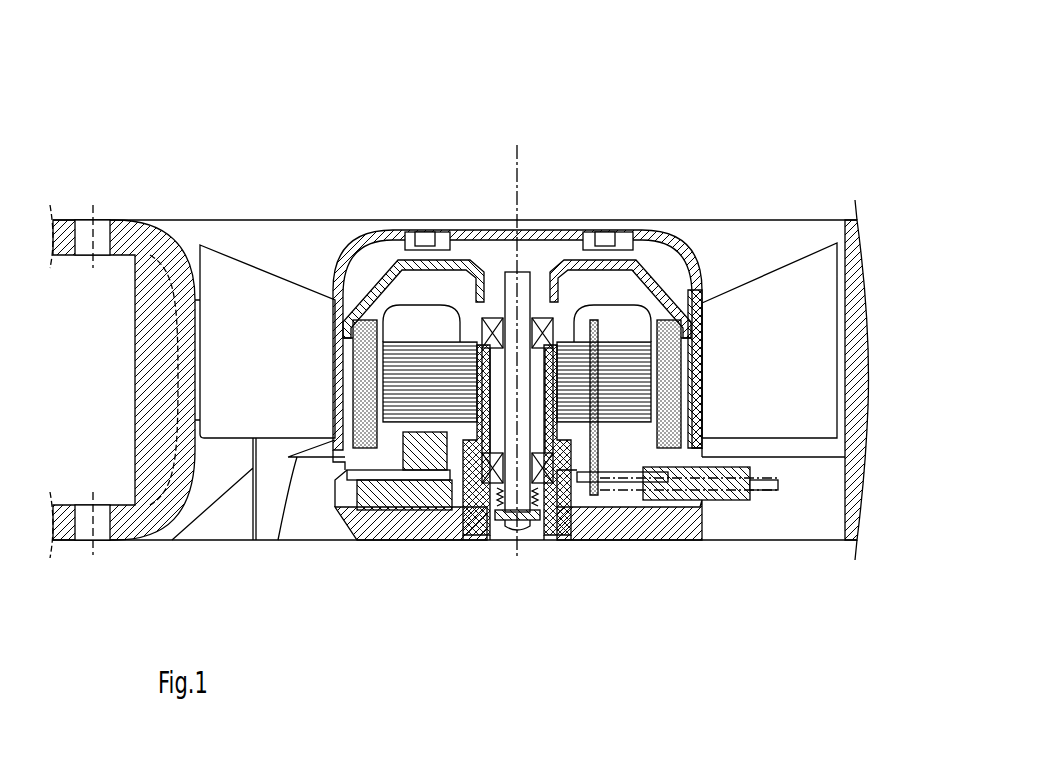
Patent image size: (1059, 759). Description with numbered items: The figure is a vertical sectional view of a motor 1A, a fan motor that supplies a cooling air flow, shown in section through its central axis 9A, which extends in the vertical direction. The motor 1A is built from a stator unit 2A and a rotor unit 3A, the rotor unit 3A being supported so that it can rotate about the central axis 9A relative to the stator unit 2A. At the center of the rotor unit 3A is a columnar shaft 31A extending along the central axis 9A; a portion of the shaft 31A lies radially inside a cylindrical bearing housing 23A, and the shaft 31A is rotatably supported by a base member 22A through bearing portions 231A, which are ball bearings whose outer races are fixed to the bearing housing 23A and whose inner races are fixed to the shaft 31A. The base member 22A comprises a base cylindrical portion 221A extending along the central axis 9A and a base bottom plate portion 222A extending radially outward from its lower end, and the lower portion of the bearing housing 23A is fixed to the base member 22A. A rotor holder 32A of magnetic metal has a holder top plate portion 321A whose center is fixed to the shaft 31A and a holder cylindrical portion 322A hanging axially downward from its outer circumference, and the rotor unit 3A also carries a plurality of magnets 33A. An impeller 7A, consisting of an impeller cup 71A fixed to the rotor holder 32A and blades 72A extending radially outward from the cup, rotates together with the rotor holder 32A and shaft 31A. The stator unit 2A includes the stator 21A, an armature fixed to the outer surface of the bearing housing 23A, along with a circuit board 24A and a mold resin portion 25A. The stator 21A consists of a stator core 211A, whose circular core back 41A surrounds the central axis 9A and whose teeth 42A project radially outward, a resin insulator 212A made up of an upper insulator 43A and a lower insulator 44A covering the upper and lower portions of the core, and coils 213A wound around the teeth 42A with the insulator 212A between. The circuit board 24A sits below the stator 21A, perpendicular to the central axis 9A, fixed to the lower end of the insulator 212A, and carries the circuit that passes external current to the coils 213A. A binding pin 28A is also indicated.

The motor 1A is at (570, 95).
The stator unit 2A is at (576, 497).
The stator 21A is at (519, 373).
The stator core 211A is at (475, 393).
The insulator 212A is at (666, 339).
The coils 213A is at (617, 320).
The base member 22A is at (546, 497).
The base cylindrical portion 221A is at (447, 407).
The base bottom plate portion 222A is at (395, 430).
The bearing housing 23A is at (560, 515).
The bearing portions 231A is at (488, 500).
The circuit board 24A is at (640, 483).
The mold resin portion 25A is at (689, 539).
The binding pin 28A is at (575, 285).
The rotor unit 3A is at (506, 282).
The shaft 31A is at (517, 238).
The rotor holder 32A is at (517, 293).
The holder top plate portion 321A is at (455, 345).
The holder cylindrical portion 322A is at (365, 325).
The magnets 33A is at (337, 300).
The core back 41A is at (360, 468).
The teeth 42A is at (340, 470).
The upper insulator 43A is at (700, 365).
The lower insulator 44A is at (706, 400).
The impeller 7A is at (508, 339).
The impeller cup 71A is at (325, 357).
The blades 72A is at (253, 290).
The central axis 9A is at (518, 172).